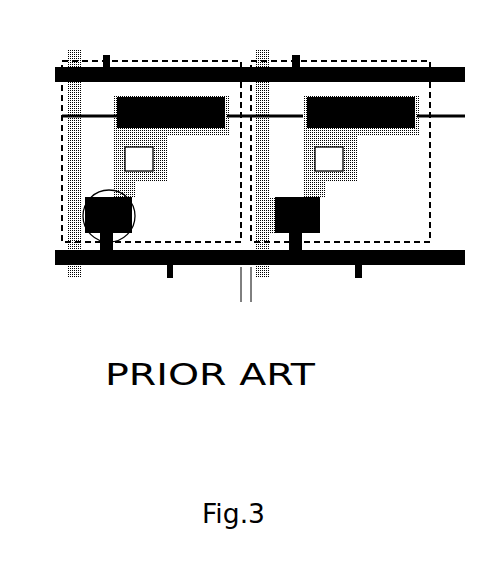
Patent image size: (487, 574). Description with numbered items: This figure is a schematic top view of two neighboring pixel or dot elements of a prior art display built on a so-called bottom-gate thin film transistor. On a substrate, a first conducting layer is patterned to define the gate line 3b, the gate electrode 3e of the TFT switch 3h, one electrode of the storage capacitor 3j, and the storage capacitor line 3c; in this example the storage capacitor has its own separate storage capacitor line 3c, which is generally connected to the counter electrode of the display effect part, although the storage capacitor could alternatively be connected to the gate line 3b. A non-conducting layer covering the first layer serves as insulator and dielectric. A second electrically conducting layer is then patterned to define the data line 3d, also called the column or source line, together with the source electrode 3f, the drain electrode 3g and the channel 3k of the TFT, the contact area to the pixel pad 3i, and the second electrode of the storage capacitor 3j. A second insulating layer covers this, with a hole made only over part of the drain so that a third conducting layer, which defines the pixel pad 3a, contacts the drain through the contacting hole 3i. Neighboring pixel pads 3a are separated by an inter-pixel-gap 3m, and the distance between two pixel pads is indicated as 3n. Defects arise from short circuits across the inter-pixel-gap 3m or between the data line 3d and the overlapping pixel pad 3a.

The pixel pad 3a is at (62, 60).
The gate line 3b is at (245, 78).
The storage capacitor line 3c is at (62, 116).
The data line 3d is at (72, 158).
The gate electrode 3e is at (85, 206).
The source electrode 3f is at (99, 227).
The drain electrode 3g is at (245, 264).
The TFT switch 3h is at (43, 250).
The contacting hole 3i is at (140, 160).
The storage capacitor 3j is at (177, 110).
The channel 3k is at (105, 191).
The inter-pixel-gap 3m is at (245, 60).
The distance between two pixel pads 3n is at (218, 288).